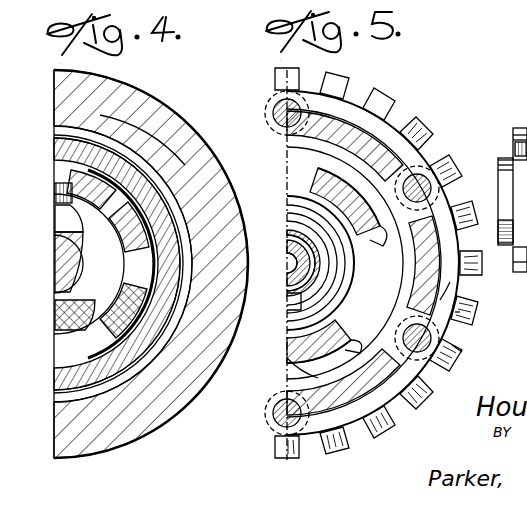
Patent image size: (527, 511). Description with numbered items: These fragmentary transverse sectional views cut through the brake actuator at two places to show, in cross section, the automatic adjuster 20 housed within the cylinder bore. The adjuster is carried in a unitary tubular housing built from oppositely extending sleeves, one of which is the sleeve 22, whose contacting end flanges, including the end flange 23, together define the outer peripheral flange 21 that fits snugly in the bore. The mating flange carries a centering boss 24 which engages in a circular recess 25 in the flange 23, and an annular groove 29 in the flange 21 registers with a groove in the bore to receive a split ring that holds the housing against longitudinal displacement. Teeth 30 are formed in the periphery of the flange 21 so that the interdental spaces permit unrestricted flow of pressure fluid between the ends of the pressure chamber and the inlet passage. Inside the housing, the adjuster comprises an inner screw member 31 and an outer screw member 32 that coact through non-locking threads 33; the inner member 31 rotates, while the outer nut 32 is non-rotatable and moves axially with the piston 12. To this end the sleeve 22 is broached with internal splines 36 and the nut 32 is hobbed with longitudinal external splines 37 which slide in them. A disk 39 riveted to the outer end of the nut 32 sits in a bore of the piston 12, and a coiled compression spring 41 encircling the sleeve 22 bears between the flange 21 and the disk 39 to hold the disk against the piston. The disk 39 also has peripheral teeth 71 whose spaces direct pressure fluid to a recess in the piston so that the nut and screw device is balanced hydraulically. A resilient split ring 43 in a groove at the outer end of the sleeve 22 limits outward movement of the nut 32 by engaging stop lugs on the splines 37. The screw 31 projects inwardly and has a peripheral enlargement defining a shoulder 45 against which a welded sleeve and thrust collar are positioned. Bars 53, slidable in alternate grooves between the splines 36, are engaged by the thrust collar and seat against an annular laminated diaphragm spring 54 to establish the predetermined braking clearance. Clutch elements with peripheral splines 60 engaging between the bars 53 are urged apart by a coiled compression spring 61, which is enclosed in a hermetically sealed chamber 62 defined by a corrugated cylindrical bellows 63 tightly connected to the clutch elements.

In FIG. 4, the piston 12 is at (138, 96).
In FIG. 4, the adjuster 20 is at (157, 276).
In FIG. 5, the adjuster 20 is at (290, 276).
In FIG. 5, the outer peripheral flange 21 is at (398, 124).
In FIG. 4, the sleeve 22 is at (145, 257).
In FIG. 5, the sleeve 22 is at (372, 226).
In FIG. 5, the end flange 23 is at (428, 160).
In FIG. 5, the centering boss 24 is at (440, 301).
In FIG. 5, the circular recess 25 is at (455, 313).
In FIG. 5, the annular groove 29 is at (458, 340).
In FIG. 5, the teeth 30 is at (350, 88).
In FIG. 4, the inner screw member 31 is at (58, 268).
In FIG. 5, the inner screw member 31 is at (502, 160).
In FIG. 4, the outer screw member 32 is at (60, 197).
In FIG. 4, the non-locking threads 33 is at (62, 220).
In FIG. 4, the internal splines 36 is at (104, 311).
In FIG. 4, the external splines 37 is at (128, 162).
In FIG. 4, the disk 39 is at (170, 166).
In FIG. 4, the coiled compression spring 41 is at (167, 300).
In FIG. 4, the resilient split ring 43 is at (120, 298).
In FIG. 5, the shoulder 45 is at (512, 188).
In FIG. 5, the bars 53 is at (313, 186).
In FIG. 5, the annular laminated diaphragm spring 54 is at (303, 368).
In FIG. 5, the splines 60 is at (314, 176).
In FIG. 5, the coiled compression spring 61 is at (290, 250).
In FIG. 5, the hermetically sealed chamber 62 is at (290, 234).
In FIG. 5, the corrugated cylindrical bellows 63 is at (292, 311).
In FIG. 4, the peripheral teeth 71 is at (187, 240).